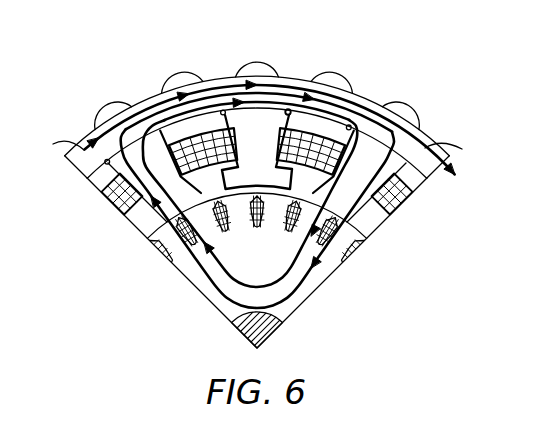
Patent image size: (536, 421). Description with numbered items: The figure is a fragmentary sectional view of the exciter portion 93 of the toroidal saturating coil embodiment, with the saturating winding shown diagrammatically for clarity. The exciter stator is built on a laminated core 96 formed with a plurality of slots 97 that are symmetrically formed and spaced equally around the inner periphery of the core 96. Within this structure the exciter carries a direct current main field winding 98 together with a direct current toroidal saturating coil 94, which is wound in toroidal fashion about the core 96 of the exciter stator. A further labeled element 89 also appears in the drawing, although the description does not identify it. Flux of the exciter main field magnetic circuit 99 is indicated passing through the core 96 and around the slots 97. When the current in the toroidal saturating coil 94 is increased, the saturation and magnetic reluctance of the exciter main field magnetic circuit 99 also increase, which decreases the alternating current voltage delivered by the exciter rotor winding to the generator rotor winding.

The stator tooth top 89 is at (289, 110).
The exciter portion 93 is at (78, 172).
The toroidal saturating coil 94 is at (192, 137).
The laminated core 96 is at (350, 127).
The slots 97 is at (201, 115).
The direct current main field winding 98 is at (180, 140).
The exciter main field magnetic circuit 99 is at (398, 137).